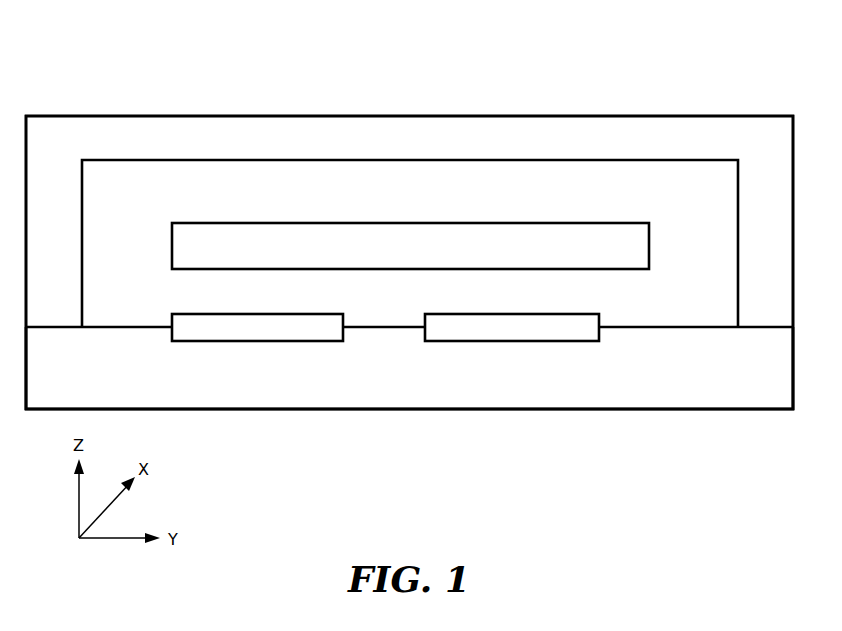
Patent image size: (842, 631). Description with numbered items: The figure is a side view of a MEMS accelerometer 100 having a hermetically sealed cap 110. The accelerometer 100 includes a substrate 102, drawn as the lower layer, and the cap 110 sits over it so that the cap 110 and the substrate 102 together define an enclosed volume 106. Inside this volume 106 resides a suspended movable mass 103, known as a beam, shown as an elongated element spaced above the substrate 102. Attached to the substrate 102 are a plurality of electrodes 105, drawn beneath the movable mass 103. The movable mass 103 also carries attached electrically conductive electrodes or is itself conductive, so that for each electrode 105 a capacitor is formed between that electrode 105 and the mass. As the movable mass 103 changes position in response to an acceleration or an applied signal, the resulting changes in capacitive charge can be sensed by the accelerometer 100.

The accelerometer 100 is at (420, 82).
The hermetically sealed cap 110 is at (409, 262).
The substrate 102 is at (409, 368).
The volume 106 is at (410, 243).
The suspended movable mass 103 is at (410, 246).
The electrodes 105 is at (385, 327).